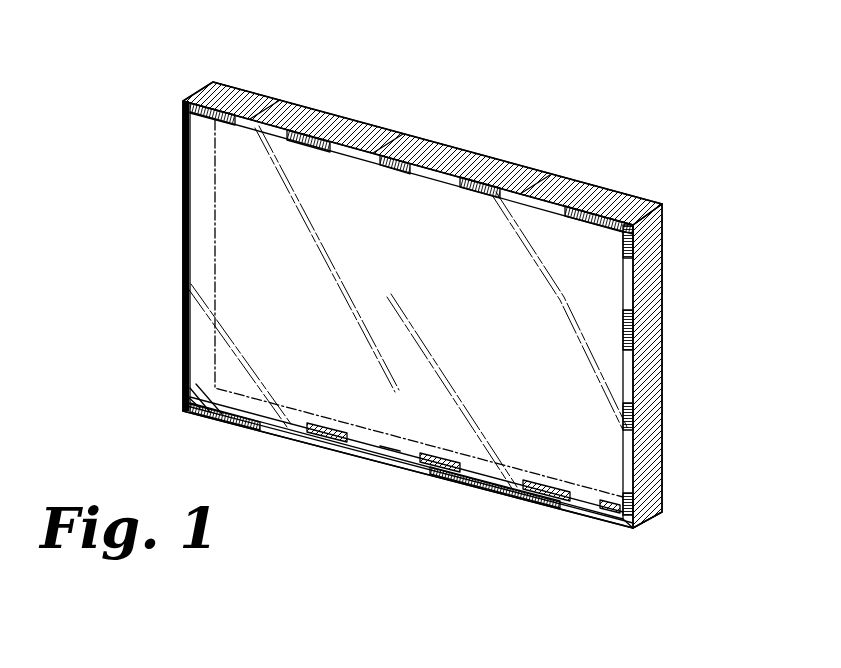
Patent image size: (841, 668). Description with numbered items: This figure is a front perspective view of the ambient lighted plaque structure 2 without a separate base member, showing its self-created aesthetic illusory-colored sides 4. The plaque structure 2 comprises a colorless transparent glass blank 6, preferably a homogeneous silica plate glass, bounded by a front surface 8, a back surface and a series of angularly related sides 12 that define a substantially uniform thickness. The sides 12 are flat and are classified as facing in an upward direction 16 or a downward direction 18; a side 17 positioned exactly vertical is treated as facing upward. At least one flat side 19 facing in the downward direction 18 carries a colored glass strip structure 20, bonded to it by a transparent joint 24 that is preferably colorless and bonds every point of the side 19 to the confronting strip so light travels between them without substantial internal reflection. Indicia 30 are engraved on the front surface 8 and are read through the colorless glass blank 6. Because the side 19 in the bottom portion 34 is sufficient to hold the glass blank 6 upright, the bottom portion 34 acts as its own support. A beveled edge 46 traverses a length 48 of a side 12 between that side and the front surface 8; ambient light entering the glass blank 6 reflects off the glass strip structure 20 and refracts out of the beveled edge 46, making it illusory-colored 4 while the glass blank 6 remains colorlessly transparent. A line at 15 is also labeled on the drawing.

The ambient lighted plaque structure 2 is at (132, 55).
The aesthetic illusory-colored sides 4 is at (521, 178).
The colorless transparent glass blank 6 is at (234, 283).
The front surface 8 is at (303, 356).
The angularly related sides 12 is at (446, 150).
The inner layer 15 is at (331, 122).
The upward direction 16 is at (583, 193).
The side 17 is at (648, 478).
The downward direction 18 is at (464, 494).
The flat side 19 is at (181, 411).
The colored glass strip structure 20 is at (249, 427).
The transparent joint 24 is at (634, 531).
The indicia 30 is at (388, 262).
The bottom portion 34 is at (390, 448).
The beveled edge 46 is at (242, 121).
The length 48 is at (373, 142).